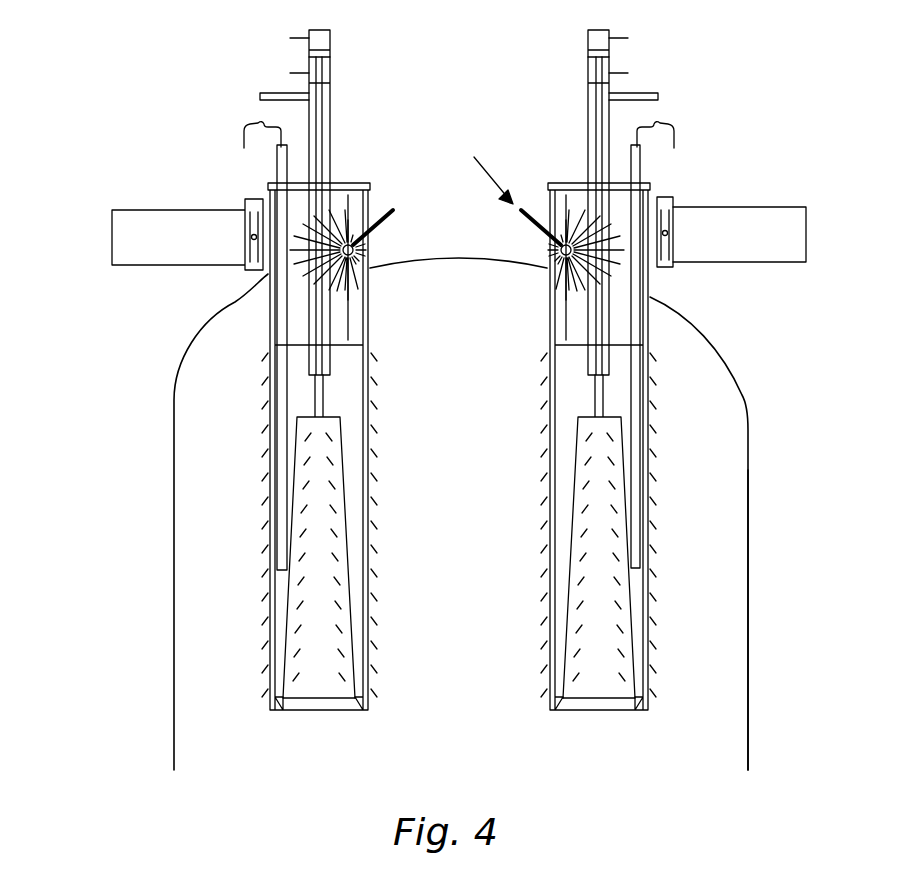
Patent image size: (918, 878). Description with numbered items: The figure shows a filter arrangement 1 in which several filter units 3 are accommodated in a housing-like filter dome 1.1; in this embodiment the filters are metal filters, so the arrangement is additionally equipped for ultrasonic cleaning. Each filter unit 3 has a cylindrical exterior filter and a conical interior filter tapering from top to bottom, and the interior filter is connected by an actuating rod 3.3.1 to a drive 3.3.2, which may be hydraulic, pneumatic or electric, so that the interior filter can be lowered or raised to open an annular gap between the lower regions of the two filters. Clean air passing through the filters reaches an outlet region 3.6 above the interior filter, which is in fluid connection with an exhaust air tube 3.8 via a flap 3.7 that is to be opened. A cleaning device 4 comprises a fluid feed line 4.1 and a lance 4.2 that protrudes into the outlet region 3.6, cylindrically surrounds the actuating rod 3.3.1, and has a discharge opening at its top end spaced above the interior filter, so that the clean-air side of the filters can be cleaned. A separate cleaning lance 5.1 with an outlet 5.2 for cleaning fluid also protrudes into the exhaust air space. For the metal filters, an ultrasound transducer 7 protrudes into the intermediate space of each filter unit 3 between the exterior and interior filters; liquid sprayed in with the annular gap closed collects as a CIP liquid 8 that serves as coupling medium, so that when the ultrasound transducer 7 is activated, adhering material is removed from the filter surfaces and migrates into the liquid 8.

The filter arrangement 1 is at (157, 592).
The filter dome 1.1 is at (742, 556).
The filter unit 3 is at (240, 450).
The actuating rod 3.3.1 is at (331, 73).
The drive 3.3.2 is at (331, 40).
The outlet region 3.6 is at (638, 298).
The flap 3.7 is at (633, 167).
The exhaust air tube 3.8 is at (797, 242).
The cleaning device 4 is at (266, 86).
The fluid feed line 4.1 is at (272, 102).
The lance 4.2 is at (295, 265).
The cleaning lance 5.1 is at (440, 157).
The outlet 5.2 is at (356, 250).
The ultrasound transducer 7 is at (283, 520).
The CIP liquid 8 is at (344, 408).